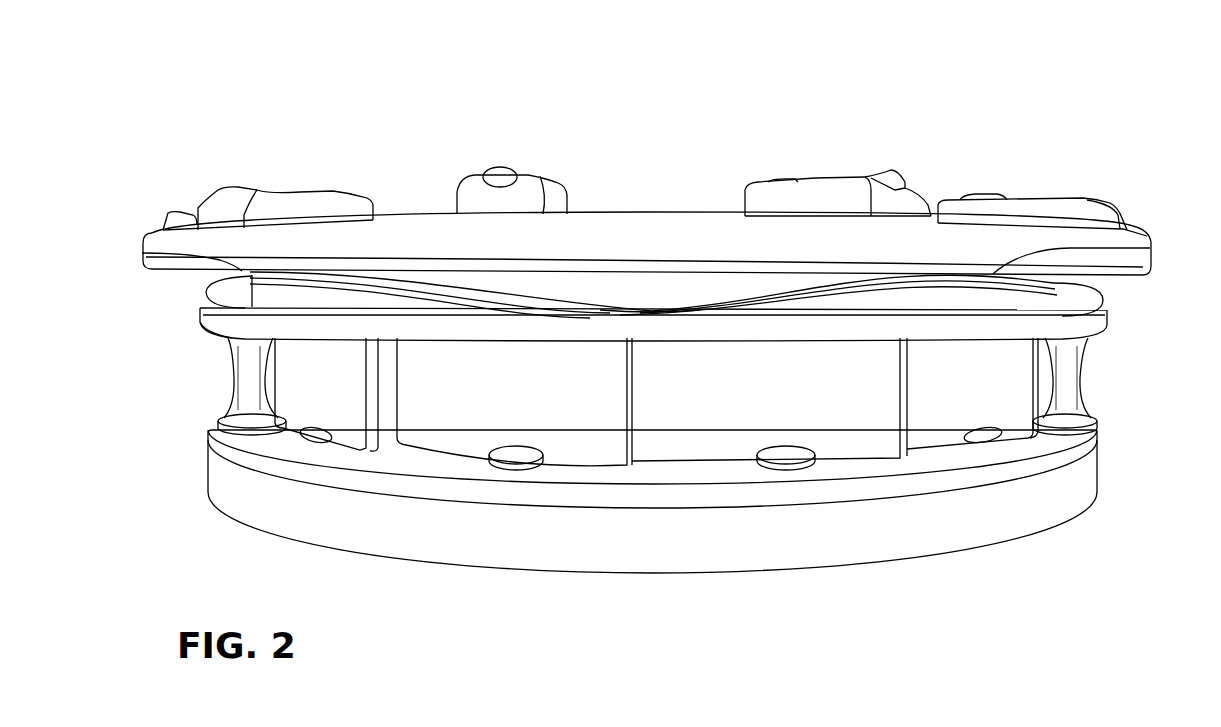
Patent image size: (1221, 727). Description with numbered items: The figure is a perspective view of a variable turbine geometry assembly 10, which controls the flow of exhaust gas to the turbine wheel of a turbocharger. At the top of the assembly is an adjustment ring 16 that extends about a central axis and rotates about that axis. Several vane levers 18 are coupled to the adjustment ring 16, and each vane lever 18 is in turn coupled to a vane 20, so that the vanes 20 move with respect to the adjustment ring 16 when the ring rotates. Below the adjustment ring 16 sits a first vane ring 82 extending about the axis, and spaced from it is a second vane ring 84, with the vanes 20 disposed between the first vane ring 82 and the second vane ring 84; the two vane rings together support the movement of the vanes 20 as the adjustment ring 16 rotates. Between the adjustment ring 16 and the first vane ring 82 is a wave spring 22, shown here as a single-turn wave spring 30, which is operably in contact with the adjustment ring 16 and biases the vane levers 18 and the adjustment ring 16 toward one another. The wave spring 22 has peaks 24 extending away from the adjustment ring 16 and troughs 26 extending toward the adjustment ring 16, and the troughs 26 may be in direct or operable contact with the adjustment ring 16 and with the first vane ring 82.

The variable turbine geometry assembly 10 is at (150, 123).
The adjustment ring 16 is at (643, 237).
The vane lever 18 is at (288, 198).
The vane 20 is at (313, 383).
The wave spring 22 is at (703, 324).
The peak 24 is at (630, 313).
The trough 26 is at (142, 255).
The single-turn wave spring 30 is at (1107, 305).
The first vane ring 82 is at (203, 325).
The second vane ring 84 is at (250, 493).